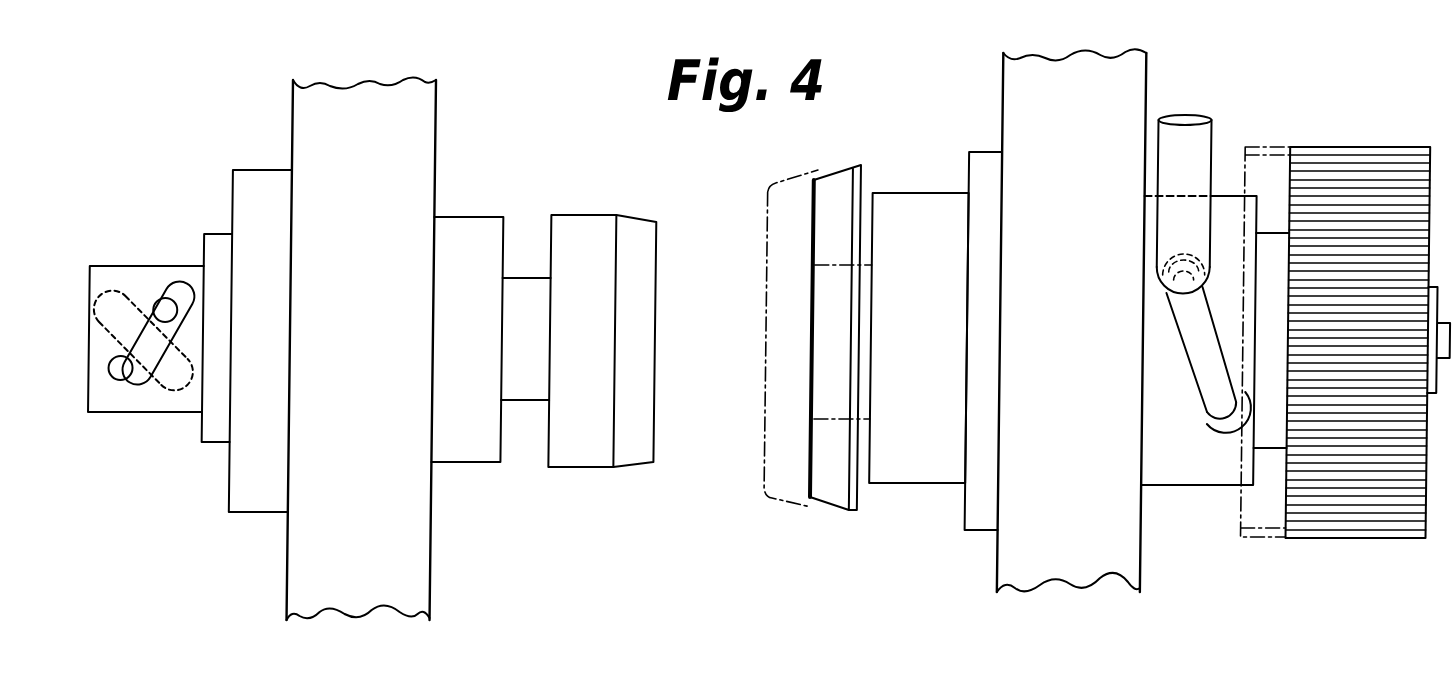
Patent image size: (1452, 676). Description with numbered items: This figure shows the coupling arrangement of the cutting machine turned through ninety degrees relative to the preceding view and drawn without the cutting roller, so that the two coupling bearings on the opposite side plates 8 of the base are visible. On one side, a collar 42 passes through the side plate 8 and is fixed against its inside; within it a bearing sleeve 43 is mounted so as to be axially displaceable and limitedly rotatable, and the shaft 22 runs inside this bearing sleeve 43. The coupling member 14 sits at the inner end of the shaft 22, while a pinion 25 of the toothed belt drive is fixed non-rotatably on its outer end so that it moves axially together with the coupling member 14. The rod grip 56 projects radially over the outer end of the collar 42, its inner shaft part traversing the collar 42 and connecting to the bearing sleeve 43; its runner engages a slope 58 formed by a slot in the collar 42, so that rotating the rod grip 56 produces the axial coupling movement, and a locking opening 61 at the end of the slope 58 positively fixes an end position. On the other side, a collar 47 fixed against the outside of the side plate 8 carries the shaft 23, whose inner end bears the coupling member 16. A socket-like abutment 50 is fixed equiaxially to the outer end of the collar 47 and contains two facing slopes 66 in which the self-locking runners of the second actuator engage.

The side plate 8 is at (393, 82).
The coupling member 14 is at (837, 178).
The coupling member 16 is at (634, 458).
The shaft 22 is at (867, 375).
The shaft 23 is at (548, 312).
The pinion 25 is at (1332, 152).
The collar 42 is at (1212, 475).
The bearing sleeve 43 is at (1282, 288).
The collar 47 is at (262, 170).
The abutment 50 is at (186, 405).
The rod grip 56 is at (1192, 118).
The slope 58 is at (1190, 345).
The locking opening 61 is at (1213, 425).
The slope 66 is at (170, 330).